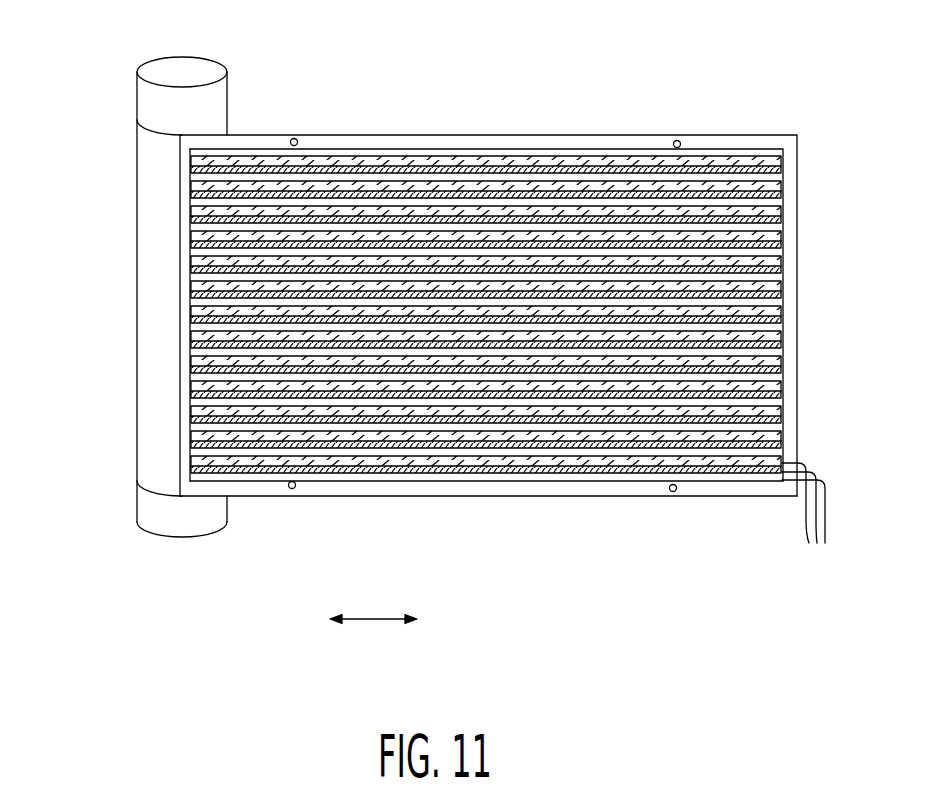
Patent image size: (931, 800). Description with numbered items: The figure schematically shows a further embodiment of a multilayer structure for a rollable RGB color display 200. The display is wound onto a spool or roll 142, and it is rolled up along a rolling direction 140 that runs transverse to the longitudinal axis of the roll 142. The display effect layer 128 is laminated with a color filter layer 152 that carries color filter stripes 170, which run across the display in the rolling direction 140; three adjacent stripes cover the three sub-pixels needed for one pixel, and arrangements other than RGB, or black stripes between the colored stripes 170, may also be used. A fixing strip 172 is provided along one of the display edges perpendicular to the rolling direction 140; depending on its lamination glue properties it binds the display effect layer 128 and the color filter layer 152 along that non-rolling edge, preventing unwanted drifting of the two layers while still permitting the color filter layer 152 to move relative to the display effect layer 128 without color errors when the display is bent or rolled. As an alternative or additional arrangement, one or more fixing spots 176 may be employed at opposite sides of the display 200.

The roll 142 is at (234, 86).
The display effect layer 128 is at (503, 134).
The fixing strip 172 is at (171, 265).
The color filter layer 152 is at (556, 486).
The fixing spots 176 is at (294, 138).
The color filter stripes 170 is at (806, 519).
The rolling direction 140 is at (377, 618).
The color display 200 is at (92, 630).